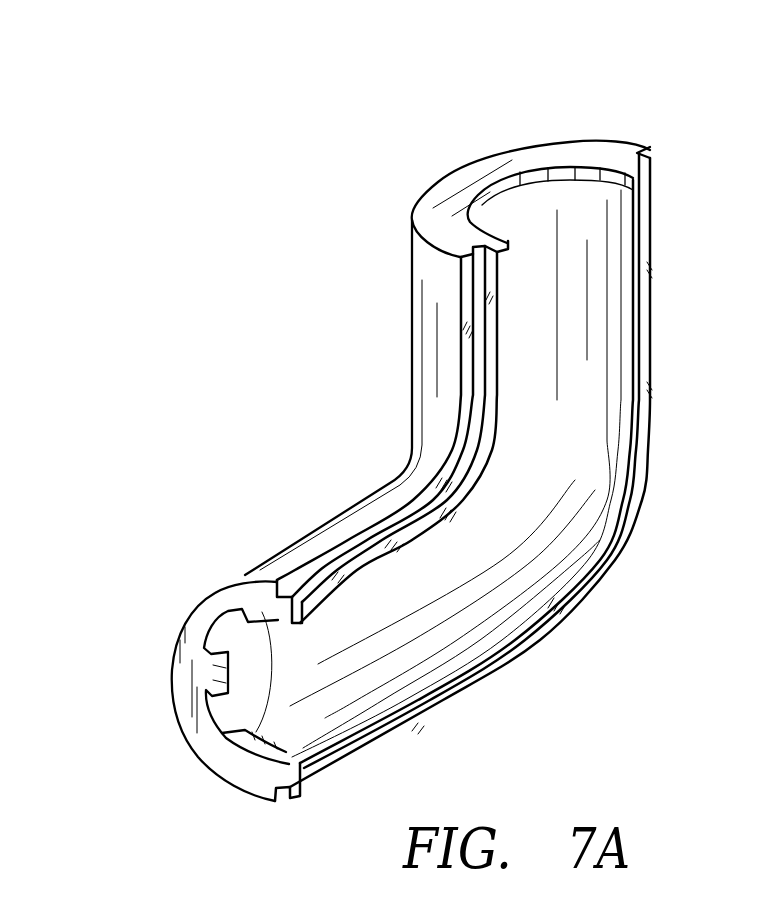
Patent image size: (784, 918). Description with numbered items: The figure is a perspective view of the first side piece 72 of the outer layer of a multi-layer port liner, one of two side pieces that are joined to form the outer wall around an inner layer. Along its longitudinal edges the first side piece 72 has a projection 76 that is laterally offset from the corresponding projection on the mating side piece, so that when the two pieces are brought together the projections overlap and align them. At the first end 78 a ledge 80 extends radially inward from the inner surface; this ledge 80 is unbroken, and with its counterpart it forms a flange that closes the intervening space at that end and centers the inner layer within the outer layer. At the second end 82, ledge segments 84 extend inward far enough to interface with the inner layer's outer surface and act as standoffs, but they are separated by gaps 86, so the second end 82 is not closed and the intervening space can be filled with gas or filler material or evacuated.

The first side piece 72 is at (459, 439).
The projection 76 is at (641, 163).
The first end 78 is at (418, 187).
The ledge 80 is at (536, 176).
The second end 82 is at (173, 606).
The ledge segments 84 is at (228, 676).
The gaps 86 is at (224, 625).